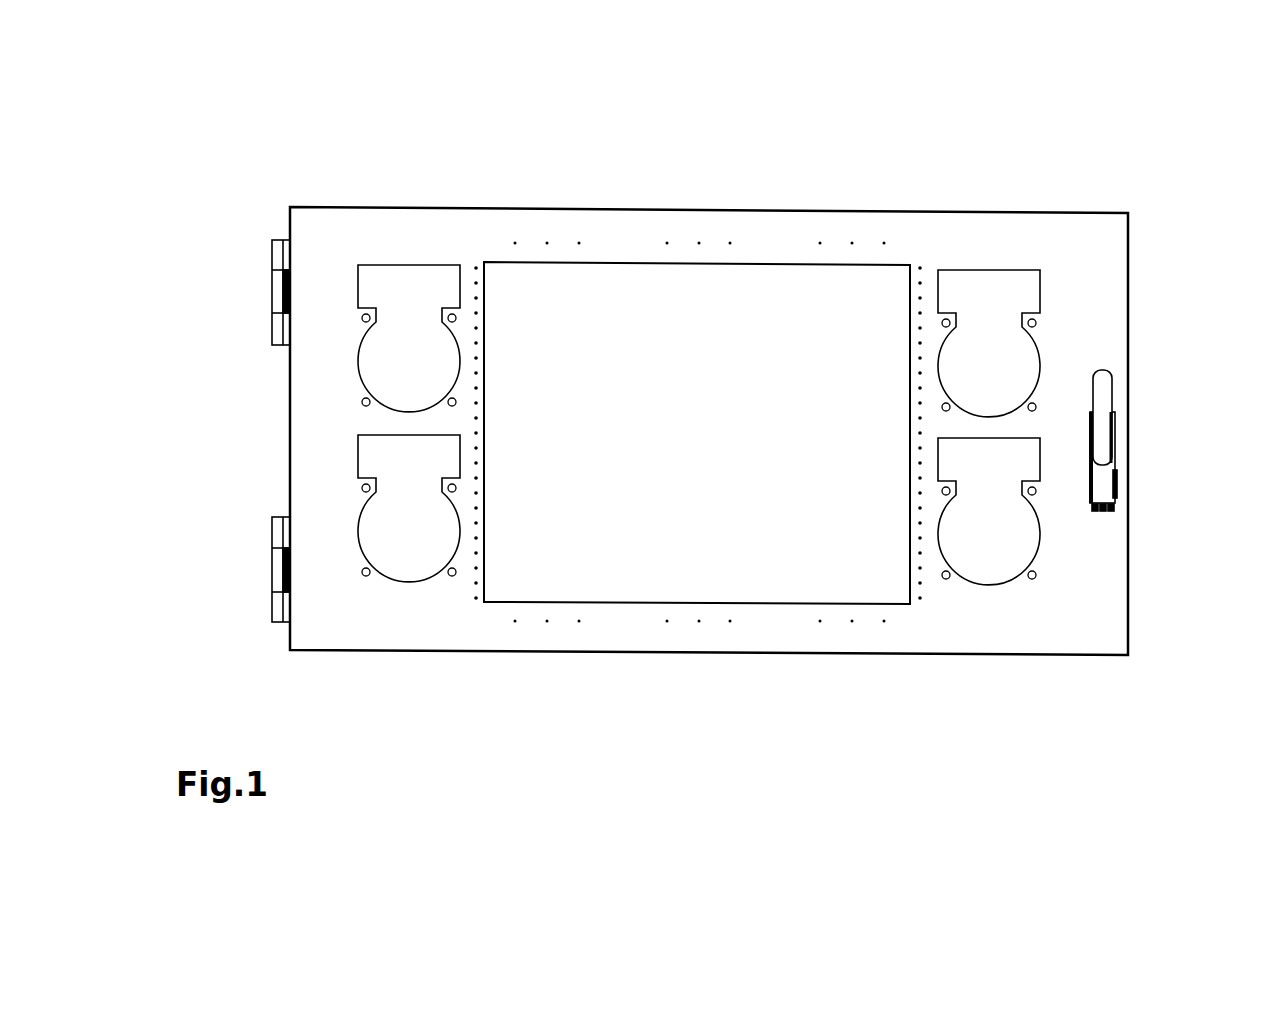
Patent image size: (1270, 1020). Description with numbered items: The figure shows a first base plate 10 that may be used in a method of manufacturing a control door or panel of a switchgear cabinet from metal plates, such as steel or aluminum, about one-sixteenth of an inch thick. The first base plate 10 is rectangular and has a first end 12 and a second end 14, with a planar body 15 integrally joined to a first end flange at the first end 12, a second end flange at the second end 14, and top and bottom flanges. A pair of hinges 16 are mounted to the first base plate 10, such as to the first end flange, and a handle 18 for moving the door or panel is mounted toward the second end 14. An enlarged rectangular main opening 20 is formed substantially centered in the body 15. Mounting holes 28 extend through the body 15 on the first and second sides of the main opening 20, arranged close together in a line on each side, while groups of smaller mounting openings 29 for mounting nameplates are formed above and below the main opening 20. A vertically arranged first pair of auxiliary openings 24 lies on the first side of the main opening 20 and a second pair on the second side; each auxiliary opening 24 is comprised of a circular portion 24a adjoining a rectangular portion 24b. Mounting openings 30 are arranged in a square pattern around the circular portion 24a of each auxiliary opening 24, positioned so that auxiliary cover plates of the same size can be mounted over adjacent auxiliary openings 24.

The first base plate 10 is at (312, 165).
The first end 12 is at (287, 431).
The second end 14 is at (1132, 452).
The planar body 15 is at (675, 633).
The hinges 16 is at (270, 276).
The handle 18 is at (1110, 423).
The main opening 20 is at (588, 302).
The auxiliary openings 24 is at (405, 262).
The circular portion 24a is at (1000, 380).
The rectangular portion 24b is at (990, 300).
The mounting holes 28 is at (478, 262).
The smaller mounting openings 29 is at (667, 246).
The mounting openings 30 is at (446, 580).